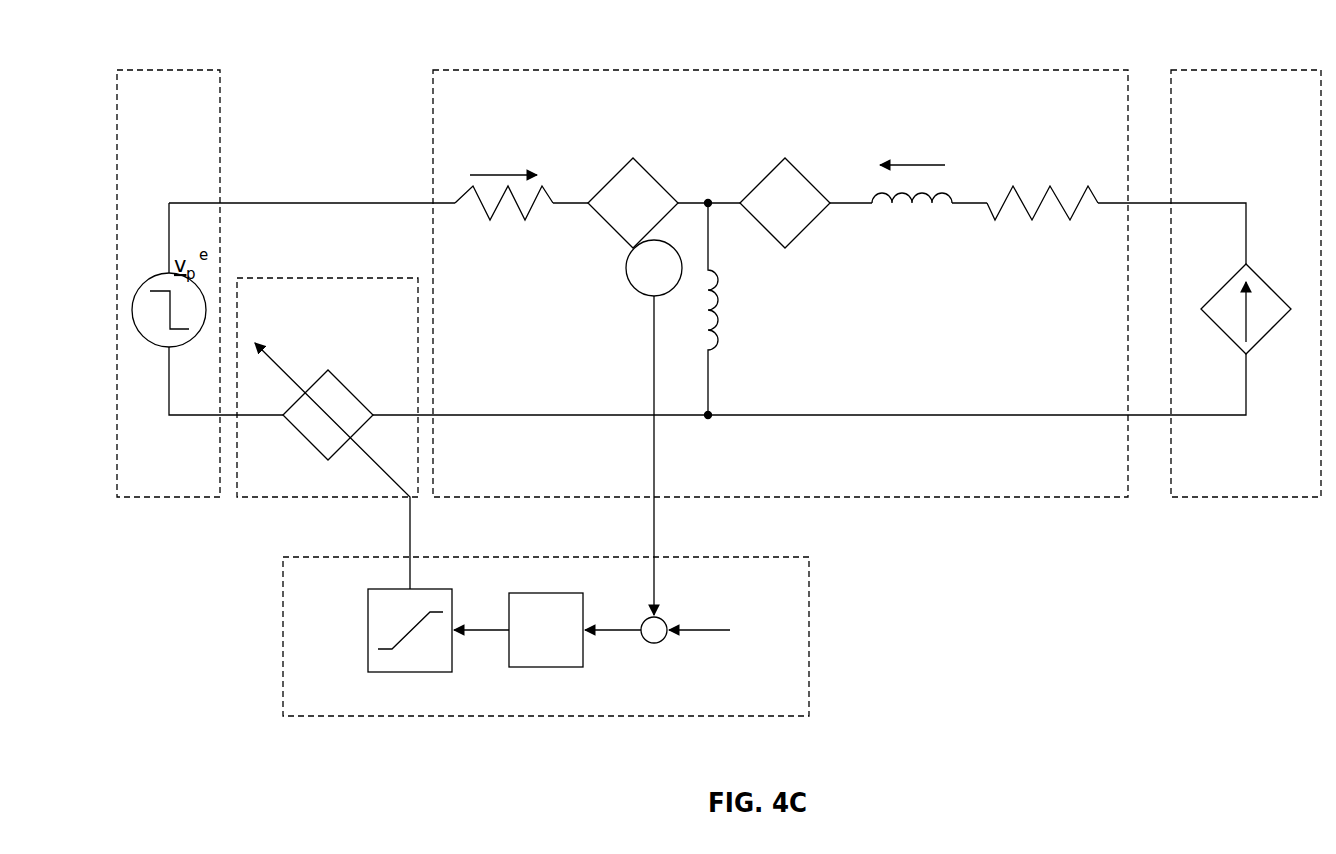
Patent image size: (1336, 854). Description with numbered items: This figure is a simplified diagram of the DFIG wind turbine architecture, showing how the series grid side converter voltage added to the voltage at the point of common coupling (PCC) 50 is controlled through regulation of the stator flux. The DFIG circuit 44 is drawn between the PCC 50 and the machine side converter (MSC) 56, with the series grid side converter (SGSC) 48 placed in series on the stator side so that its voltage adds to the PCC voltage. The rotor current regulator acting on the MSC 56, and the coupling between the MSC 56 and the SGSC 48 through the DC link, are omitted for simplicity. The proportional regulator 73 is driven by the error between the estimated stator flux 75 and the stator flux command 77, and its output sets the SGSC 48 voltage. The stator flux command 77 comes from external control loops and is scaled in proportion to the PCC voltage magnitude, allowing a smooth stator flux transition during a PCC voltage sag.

The point of common coupling (PCC) 50 is at (161, 68).
The DFIG circuit 44 is at (476, 68).
The machine side converter (MSC) 56 is at (1213, 68).
The series grid side converter (SGSC) 48 is at (279, 278).
The proportional regulator 73 is at (328, 555).
The estimated stator flux 75 is at (653, 535).
The stator flux command 77 is at (696, 625).